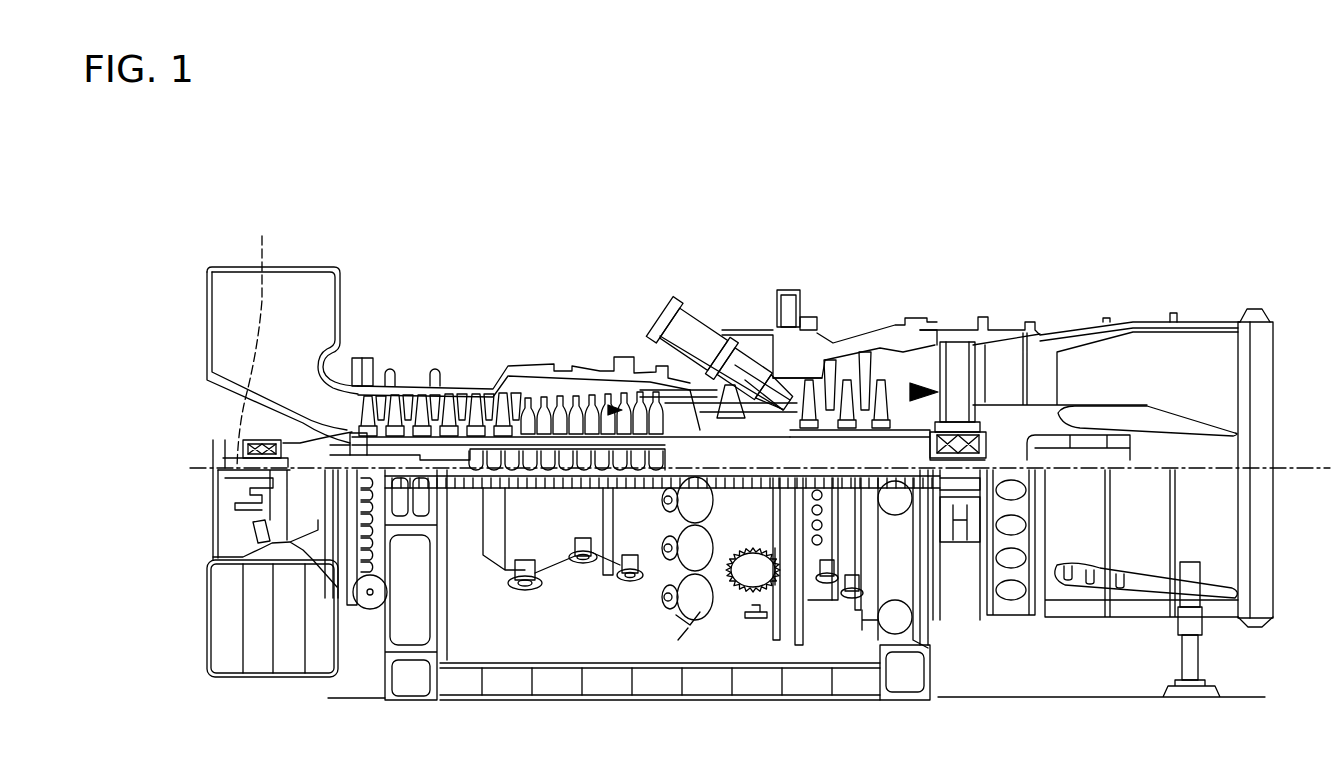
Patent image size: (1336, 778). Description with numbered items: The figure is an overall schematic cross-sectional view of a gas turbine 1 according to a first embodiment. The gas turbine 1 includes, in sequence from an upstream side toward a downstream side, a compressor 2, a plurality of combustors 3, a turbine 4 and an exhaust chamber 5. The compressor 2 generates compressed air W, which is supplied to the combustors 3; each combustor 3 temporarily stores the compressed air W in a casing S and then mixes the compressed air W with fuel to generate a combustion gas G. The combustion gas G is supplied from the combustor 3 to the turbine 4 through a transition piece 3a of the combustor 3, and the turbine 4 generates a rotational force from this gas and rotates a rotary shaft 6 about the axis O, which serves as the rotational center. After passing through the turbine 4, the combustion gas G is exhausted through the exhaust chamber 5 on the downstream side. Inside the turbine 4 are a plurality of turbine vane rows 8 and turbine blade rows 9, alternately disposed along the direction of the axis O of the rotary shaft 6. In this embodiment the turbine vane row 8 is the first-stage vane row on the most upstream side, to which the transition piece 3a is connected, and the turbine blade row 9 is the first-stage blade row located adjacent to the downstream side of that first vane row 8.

The gas turbine 1 is at (1196, 274).
The compressor 2 is at (430, 326).
The combustor 3 is at (658, 290).
The transition piece 3a is at (733, 312).
The turbine 4 is at (820, 285).
The exhaust chamber 5 is at (938, 298).
The rotary shaft 6 is at (992, 455).
The turbine vane row 8 is at (765, 315).
The turbine blade row 9 is at (793, 450).
The combustion gas G is at (930, 325).
The axis O is at (253, 336).
The casing S is at (750, 310).
The compressed air W is at (608, 410).